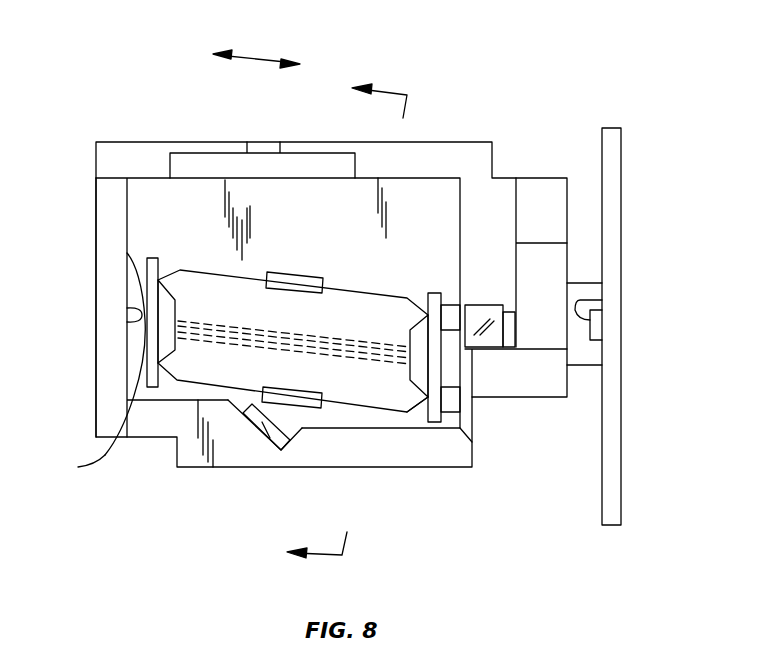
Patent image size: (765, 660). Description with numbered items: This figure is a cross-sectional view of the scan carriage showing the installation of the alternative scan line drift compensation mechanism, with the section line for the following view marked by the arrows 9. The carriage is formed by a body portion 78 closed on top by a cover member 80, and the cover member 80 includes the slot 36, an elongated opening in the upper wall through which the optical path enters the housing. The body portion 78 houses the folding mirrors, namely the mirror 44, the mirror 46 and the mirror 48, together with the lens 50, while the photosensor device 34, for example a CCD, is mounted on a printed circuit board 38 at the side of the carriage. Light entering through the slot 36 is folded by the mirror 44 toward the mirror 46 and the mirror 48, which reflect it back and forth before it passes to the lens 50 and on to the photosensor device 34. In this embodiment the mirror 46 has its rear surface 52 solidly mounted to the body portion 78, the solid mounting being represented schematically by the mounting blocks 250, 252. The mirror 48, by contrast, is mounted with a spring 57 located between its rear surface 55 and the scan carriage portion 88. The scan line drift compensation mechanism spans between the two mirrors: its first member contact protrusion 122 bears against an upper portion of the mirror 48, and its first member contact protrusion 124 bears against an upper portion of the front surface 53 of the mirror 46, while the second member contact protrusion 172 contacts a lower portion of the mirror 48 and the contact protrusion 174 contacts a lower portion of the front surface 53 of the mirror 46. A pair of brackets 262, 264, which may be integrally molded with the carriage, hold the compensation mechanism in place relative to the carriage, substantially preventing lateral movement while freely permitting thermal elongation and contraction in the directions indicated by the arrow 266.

The cover member 80 is at (123, 157).
The slot 36 is at (261, 130).
The body portion 78 is at (96, 410).
The printed circuit board 38 is at (622, 153).
The photosensor device 34 is at (580, 300).
The mirror 48 is at (152, 258).
The scan carriage portion 88 is at (127, 311).
The spring 57 is at (145, 363).
The rear surface 55 is at (78, 467).
The first member contact protrusion 124 is at (165, 278).
The second member contact protrusion 174 is at (168, 368).
The bracket 262 is at (298, 280).
The bracket 264 is at (303, 405).
The mirror 44 is at (265, 430).
The first member contact protrusion 122 is at (425, 308).
The mirror 46 is at (435, 422).
The mounting block 250 is at (450, 305).
The second member contact protrusion 172 is at (425, 392).
The front surface 53 is at (420, 395).
The mounting block 252 is at (440, 407).
The lens 50 is at (486, 305).
The rear surface 52 is at (445, 368).
The arrow 266 is at (257, 55).
The section line 9- 9 is at (360, 330).